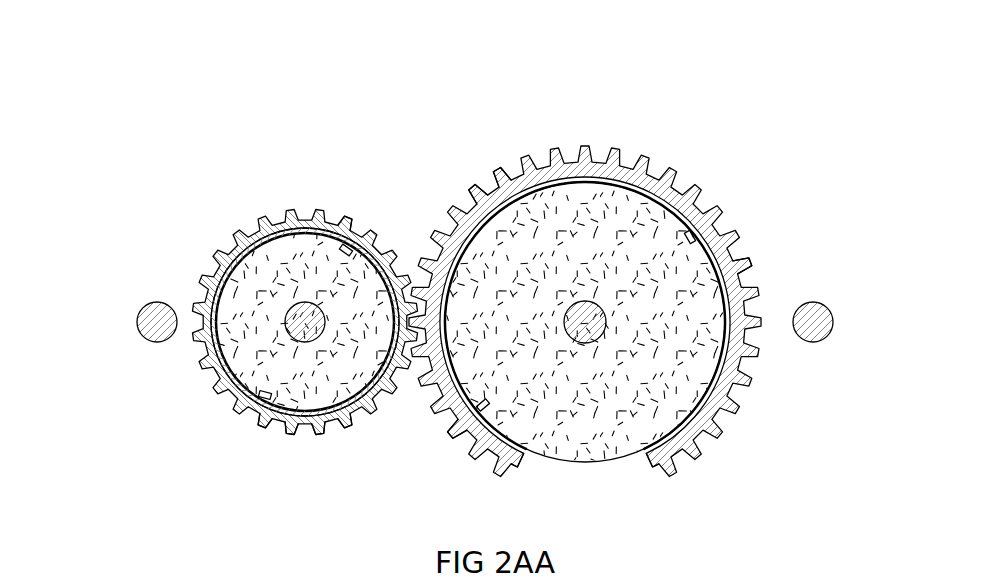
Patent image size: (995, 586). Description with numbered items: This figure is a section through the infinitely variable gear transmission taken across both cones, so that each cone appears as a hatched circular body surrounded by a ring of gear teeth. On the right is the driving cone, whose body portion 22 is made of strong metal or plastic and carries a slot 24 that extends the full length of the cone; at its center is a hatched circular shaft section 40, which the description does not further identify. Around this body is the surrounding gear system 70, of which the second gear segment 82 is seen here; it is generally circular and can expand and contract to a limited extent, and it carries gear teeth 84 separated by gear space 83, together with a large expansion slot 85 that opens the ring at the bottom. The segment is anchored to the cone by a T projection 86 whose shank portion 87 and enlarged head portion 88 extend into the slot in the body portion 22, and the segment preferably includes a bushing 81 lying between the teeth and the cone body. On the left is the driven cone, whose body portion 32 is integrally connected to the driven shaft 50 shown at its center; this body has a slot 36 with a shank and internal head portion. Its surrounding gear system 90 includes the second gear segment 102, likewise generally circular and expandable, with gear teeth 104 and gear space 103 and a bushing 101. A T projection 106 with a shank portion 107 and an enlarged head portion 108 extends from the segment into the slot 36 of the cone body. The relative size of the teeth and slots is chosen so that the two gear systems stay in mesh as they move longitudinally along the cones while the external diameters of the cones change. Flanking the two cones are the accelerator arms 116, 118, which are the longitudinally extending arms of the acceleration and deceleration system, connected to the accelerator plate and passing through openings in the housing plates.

The surrounding gear system 90 is at (188, 213).
The surrounding gear system 70 is at (783, 212).
The second gear segment 102 is at (172, 440).
The slot 36 is at (250, 418).
The bushing 101 is at (263, 432).
The gear teeth 104 is at (347, 420).
The gear space 103 is at (358, 420).
The T projection 106 is at (358, 224).
The shank portion 107 is at (296, 225).
The body portion 32 is at (262, 280).
The driven shaft 50 is at (317, 335).
The enlarged head portion 108 is at (404, 262).
The slot 24 is at (718, 194).
The gear space 83 is at (487, 178).
The gear teeth 84 is at (497, 160).
The expansion slot 85 is at (627, 465).
The shank portion 87 is at (515, 478).
The T projection 86 is at (448, 442).
The second gear segment 82 is at (793, 231).
The bushing 81 is at (531, 190).
The body portion 22 is at (604, 222).
The second shaft 40 is at (593, 343).
The enlarged head portion 88 is at (490, 405).
The accelerator arm 116 is at (813, 322).
The accelerator arm 118 is at (150, 322).